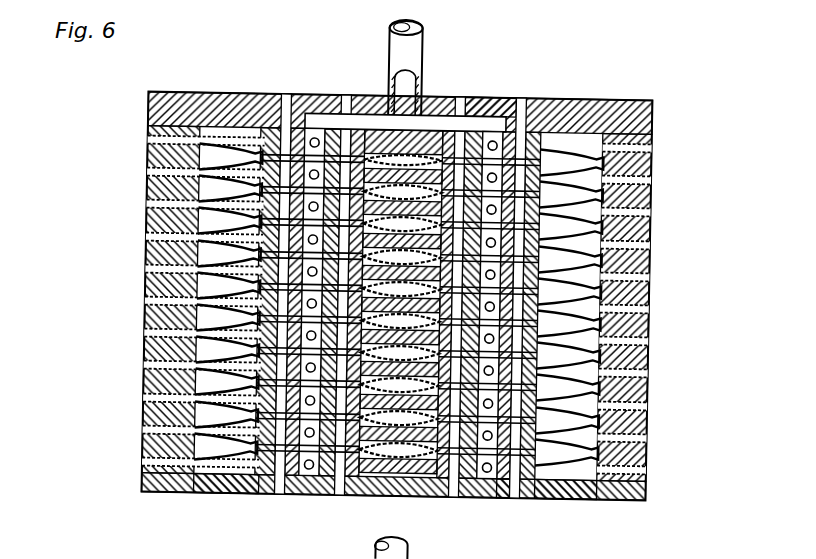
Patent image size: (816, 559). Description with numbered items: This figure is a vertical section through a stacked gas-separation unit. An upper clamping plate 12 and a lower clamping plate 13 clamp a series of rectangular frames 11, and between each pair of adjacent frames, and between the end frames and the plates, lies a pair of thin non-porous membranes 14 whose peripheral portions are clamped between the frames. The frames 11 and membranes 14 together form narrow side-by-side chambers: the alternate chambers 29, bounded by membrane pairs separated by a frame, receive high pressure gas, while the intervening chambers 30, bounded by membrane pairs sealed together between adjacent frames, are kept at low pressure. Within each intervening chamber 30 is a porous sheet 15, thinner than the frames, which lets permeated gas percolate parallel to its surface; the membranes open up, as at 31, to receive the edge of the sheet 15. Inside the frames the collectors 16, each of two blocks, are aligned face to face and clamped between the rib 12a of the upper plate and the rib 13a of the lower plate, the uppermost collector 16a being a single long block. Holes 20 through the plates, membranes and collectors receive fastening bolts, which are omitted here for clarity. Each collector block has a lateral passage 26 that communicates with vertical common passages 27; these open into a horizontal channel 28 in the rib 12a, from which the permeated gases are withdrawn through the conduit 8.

The conduit 8 is at (418, 48).
The rectangular frame 11 is at (650, 322).
The upper clamping plate 12 is at (650, 135).
The rib of upper clamping plate 12a is at (492, 96).
The lower clamping plate 13 is at (649, 492).
The rib of lower clamping plate 13a is at (505, 497).
The membrane 14 is at (605, 196).
The porous sheet 15 is at (222, 493).
The collector 16 is at (336, 496).
The uppermost collector 16a is at (380, 140).
The hole 20 is at (283, 96).
The lateral passage 26 is at (486, 468).
The common passage 27 is at (493, 470).
The horizontal channel 28 is at (437, 125).
The alternate chamber 29 is at (398, 305).
The intervening chamber 30 is at (600, 214).
The membrane opening point 31 is at (580, 497).